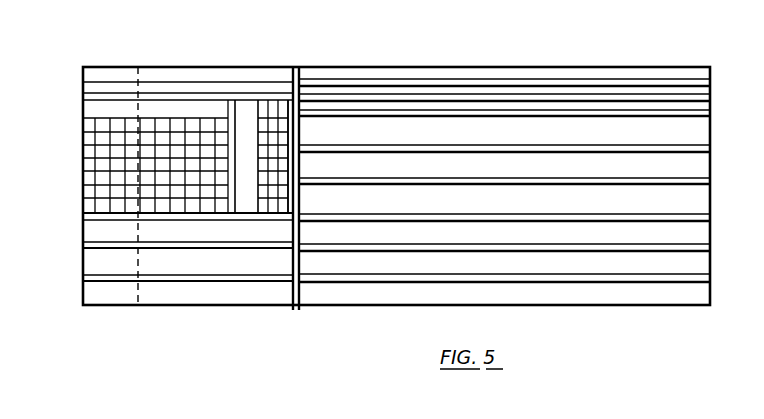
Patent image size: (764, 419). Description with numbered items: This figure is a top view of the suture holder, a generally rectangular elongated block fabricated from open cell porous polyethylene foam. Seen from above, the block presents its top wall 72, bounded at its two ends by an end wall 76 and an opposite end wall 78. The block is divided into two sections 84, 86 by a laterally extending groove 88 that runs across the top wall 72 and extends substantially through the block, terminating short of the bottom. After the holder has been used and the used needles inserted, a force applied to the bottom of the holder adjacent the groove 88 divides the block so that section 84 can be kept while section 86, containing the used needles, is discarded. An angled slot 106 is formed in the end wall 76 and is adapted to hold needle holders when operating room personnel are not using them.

The top wall 72 is at (703, 130).
The end wall 76 is at (70, 152).
The end wall 78 is at (711, 196).
The section 84 is at (217, 65).
The section 86 is at (508, 65).
The groove 88 is at (295, 308).
The angled slot 106 is at (138, 100).